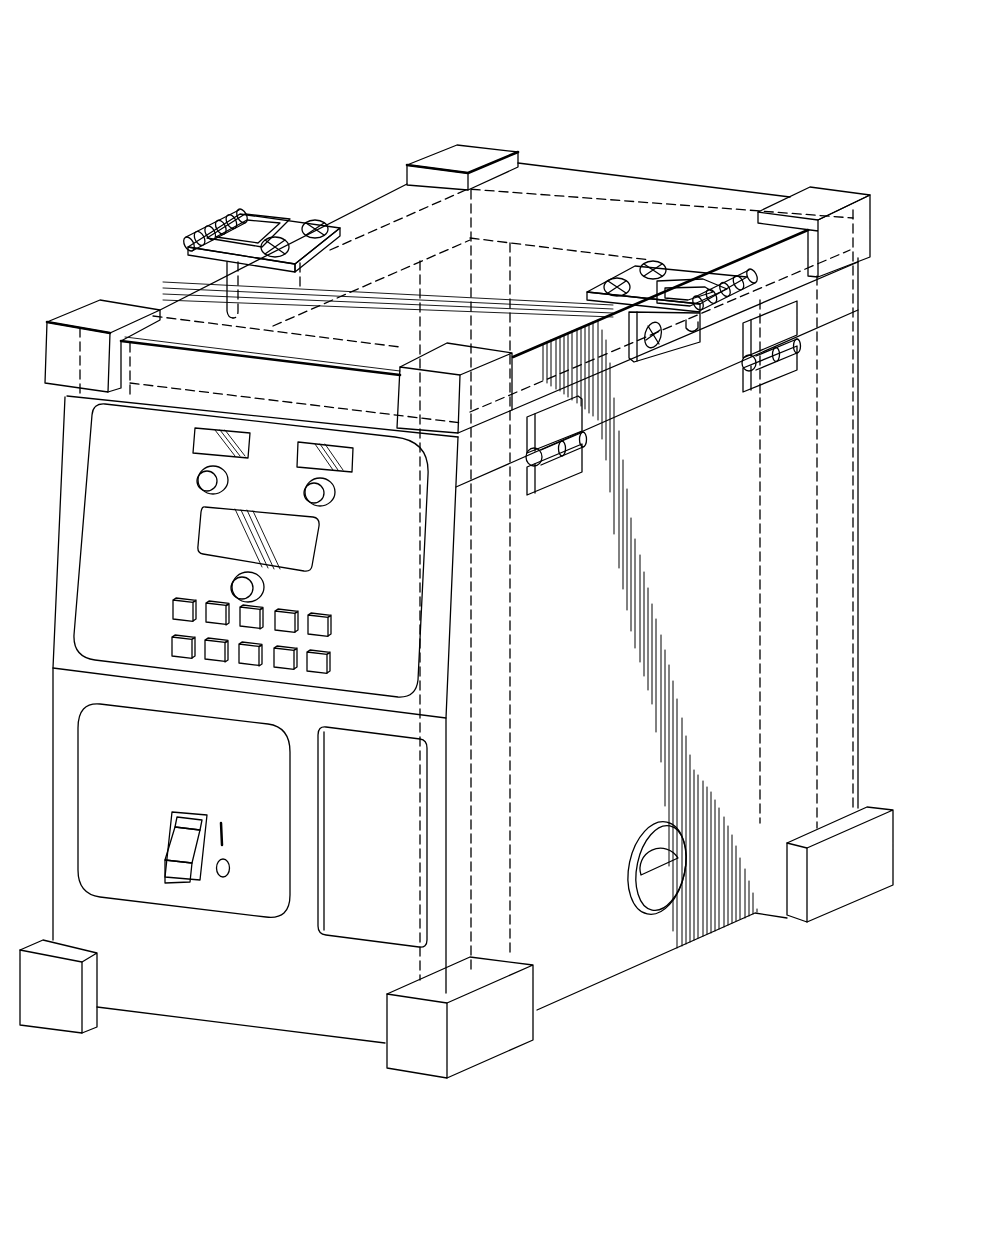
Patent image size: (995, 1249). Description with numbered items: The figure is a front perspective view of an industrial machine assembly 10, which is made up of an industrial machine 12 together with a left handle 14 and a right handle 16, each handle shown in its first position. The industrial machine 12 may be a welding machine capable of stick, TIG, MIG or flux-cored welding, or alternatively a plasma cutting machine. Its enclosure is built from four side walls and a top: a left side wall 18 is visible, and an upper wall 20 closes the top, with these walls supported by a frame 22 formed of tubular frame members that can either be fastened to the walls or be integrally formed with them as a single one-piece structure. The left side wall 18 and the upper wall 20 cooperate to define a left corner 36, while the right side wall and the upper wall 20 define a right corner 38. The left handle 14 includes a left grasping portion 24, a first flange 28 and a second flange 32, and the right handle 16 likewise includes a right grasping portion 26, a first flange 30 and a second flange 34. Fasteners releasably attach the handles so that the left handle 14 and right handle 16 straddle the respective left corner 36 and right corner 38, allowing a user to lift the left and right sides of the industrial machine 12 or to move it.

The industrial machine assembly 10 is at (177, 63).
The industrial machine 12 is at (788, 157).
The left handle 14 is at (571, 270).
The right handle 16 is at (252, 192).
The left side wall 18 is at (610, 960).
The upper wall 20 is at (598, 186).
The frame 22 is at (429, 322).
The left grasping portion 24 is at (720, 288).
The right grasping portion 26 is at (218, 237).
The first flange 28 is at (630, 277).
The first flange 30 is at (283, 228).
The second flange 32 is at (684, 352).
The second flange 34 is at (256, 310).
The left corner 36 is at (738, 250).
The right corner 38 is at (367, 192).